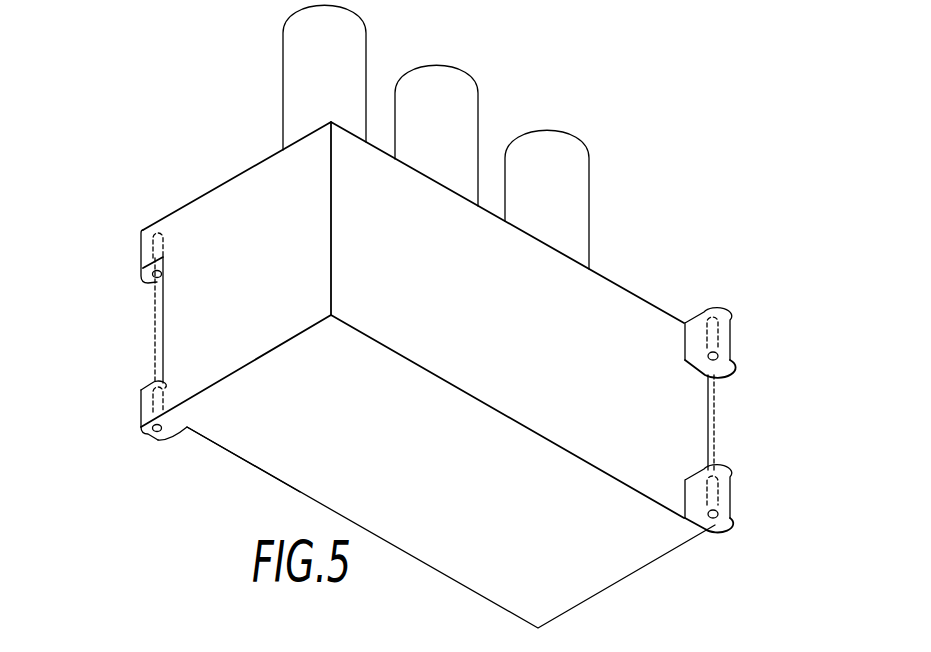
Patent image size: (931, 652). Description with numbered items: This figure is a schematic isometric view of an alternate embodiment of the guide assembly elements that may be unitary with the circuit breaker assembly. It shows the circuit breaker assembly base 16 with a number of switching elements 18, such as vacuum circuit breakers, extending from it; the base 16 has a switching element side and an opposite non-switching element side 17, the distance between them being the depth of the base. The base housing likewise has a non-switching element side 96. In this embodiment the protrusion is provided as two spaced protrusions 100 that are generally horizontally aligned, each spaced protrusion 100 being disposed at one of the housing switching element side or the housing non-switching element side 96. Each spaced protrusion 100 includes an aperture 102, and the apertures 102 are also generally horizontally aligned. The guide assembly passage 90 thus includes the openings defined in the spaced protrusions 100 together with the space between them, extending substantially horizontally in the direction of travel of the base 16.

The circuit breaker assembly base 16 is at (515, 328).
The non-switching element side 17 is at (247, 440).
The switching element 18 is at (357, 50).
The guide assembly passage 90 is at (152, 320).
The circuit breaker assembly base housing non-switching element side 96 is at (305, 477).
The spaced protrusion 100 is at (142, 246).
The aperture 102 is at (155, 274).